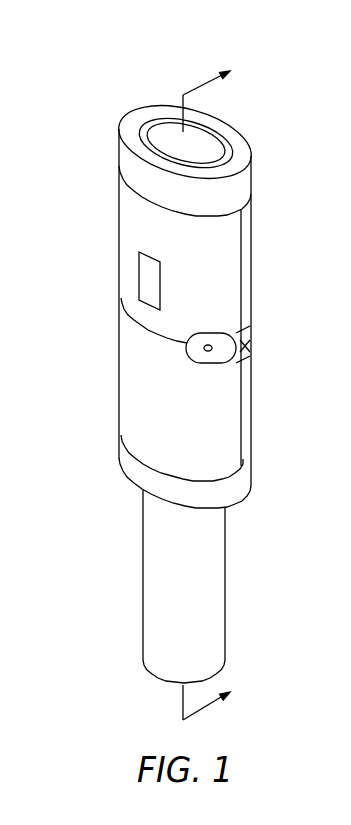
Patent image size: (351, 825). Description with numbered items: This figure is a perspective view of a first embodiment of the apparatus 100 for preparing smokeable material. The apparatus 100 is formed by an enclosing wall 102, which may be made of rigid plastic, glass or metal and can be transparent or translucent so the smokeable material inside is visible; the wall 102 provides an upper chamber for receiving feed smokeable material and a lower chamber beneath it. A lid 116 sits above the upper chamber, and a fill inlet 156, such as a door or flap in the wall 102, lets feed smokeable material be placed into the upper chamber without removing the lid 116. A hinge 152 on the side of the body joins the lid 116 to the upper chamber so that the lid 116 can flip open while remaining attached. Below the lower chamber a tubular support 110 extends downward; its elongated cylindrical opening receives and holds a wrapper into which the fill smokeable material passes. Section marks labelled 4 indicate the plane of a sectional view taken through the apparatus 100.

The apparatus 100 is at (79, 141).
The wall 102 is at (120, 277).
The lid 116 is at (250, 190).
The fill inlet 156 is at (139, 260).
The hinge 152 is at (240, 349).
The support 110 is at (158, 598).
The section line 4- 4 is at (218, 389).